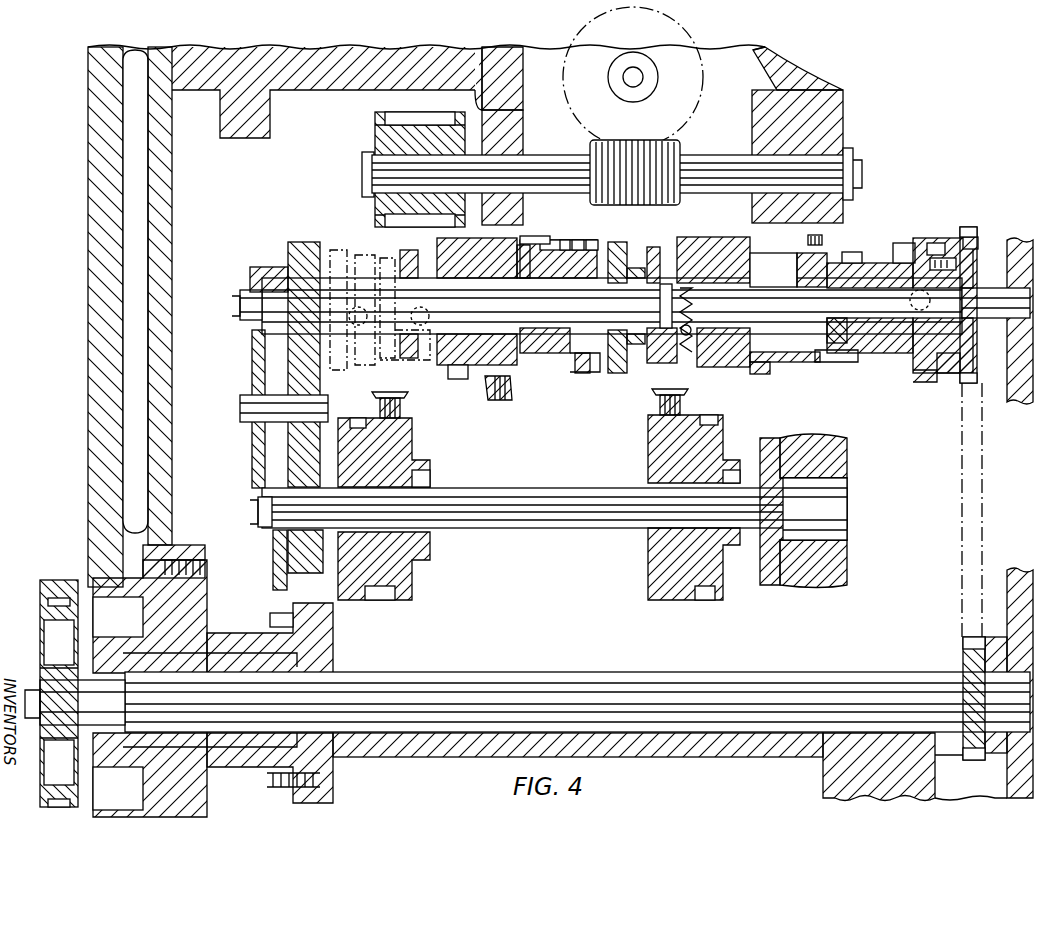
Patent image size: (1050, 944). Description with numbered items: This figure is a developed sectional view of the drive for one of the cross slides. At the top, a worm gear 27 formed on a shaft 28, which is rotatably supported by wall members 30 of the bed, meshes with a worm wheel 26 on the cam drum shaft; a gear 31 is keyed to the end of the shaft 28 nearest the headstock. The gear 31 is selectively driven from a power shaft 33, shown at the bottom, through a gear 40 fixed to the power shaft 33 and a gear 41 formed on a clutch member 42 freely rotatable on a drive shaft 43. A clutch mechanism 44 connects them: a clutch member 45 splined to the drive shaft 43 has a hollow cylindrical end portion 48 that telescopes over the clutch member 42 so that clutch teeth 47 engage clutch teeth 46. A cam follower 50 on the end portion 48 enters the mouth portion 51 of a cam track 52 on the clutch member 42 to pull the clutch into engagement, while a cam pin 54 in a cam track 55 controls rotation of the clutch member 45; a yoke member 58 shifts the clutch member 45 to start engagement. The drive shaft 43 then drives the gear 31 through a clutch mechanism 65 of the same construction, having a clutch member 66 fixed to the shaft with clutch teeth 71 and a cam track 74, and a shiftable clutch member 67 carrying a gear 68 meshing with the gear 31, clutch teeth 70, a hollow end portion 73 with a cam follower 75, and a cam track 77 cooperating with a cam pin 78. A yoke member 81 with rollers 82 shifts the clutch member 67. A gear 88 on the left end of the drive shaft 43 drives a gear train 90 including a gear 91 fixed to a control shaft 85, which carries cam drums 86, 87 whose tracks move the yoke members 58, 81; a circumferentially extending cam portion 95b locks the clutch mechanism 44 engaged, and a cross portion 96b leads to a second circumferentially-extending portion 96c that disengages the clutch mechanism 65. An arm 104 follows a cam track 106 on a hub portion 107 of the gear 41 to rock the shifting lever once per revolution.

The worm wheel 26 is at (690, 98).
The worm gear 27 is at (664, 200).
The shaft 28 is at (712, 198).
The wall members 30 is at (512, 134).
The gear 31 is at (378, 132).
The power shaft 33 is at (588, 672).
The gear 40 is at (962, 655).
The gear 41 is at (958, 383).
The clutch member 42 is at (878, 256).
The drive shaft 43 is at (985, 290).
The clutch mechanism 44 is at (878, 374).
The clutch member 45 is at (703, 250).
The clutch teeth 46 is at (900, 245).
The clutch teeth 47 is at (828, 364).
The end portion 48 is at (786, 256).
The cam follower 50 is at (822, 256).
The mouth portion 51 is at (846, 248).
The cam track 52 is at (878, 240).
The cam pin 54 is at (790, 365).
The cam track 55 is at (738, 367).
The yoke member 58 is at (668, 362).
The clutch mechanism 65 is at (557, 382).
The clutch member 66 is at (566, 244).
The clutch member 67 is at (452, 368).
The gear 68 is at (456, 380).
The clutch teeth 70 is at (592, 244).
The clutch teeth 71 is at (606, 370).
The end portion 73 is at (553, 240).
The cam track 74 is at (540, 368).
The cam follower 75 is at (576, 376).
The cam track 77 is at (538, 246).
The cam pin 78 is at (488, 398).
The yoke member 81 is at (410, 372).
The rollers 82 is at (414, 306).
The control shaft 85 is at (600, 486).
The cam drum 86 is at (648, 578).
The cam drum 87 is at (412, 578).
The gear 88 is at (270, 273).
The gear train 90 is at (246, 380).
The gear 91 is at (272, 560).
The circumferentially extending cam portion 95b is at (708, 600).
The cross portion 96b is at (388, 600).
The second circumferentially-extending portion 96c is at (365, 412).
The arm 104 is at (918, 383).
The cam track 106 is at (940, 228).
The hub portion 107 is at (965, 235).